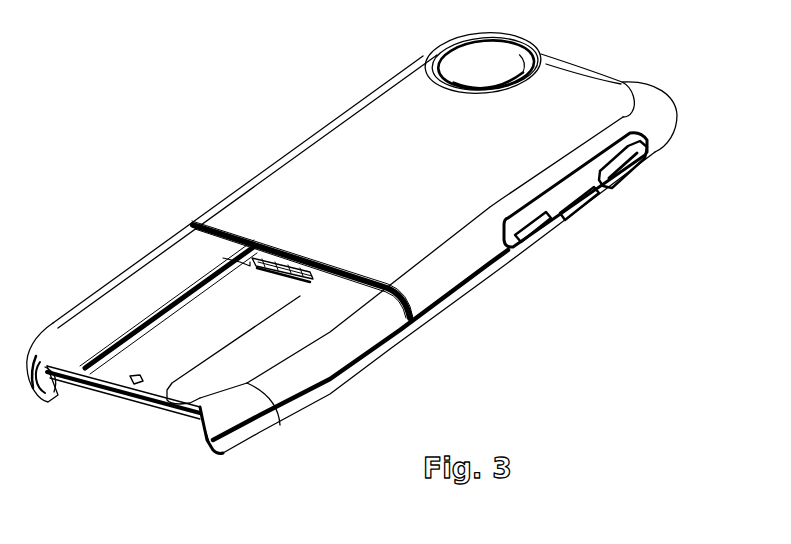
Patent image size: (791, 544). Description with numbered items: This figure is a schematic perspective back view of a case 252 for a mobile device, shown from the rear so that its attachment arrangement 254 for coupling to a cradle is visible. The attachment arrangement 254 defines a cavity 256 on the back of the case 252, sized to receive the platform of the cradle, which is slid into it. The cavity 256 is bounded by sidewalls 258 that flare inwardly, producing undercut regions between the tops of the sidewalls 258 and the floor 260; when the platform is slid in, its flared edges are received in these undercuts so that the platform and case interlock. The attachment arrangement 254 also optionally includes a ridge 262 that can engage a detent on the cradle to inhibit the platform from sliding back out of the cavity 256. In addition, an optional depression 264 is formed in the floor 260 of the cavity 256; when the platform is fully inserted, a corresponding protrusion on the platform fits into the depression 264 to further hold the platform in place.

The case 252 is at (352, 264).
The attachment arrangement 254 is at (236, 308).
The cavity 256 is at (176, 329).
The sidewalls 258 is at (100, 360).
The floor 260 is at (226, 326).
The ridge 262 is at (291, 278).
The depression 264 is at (139, 386).